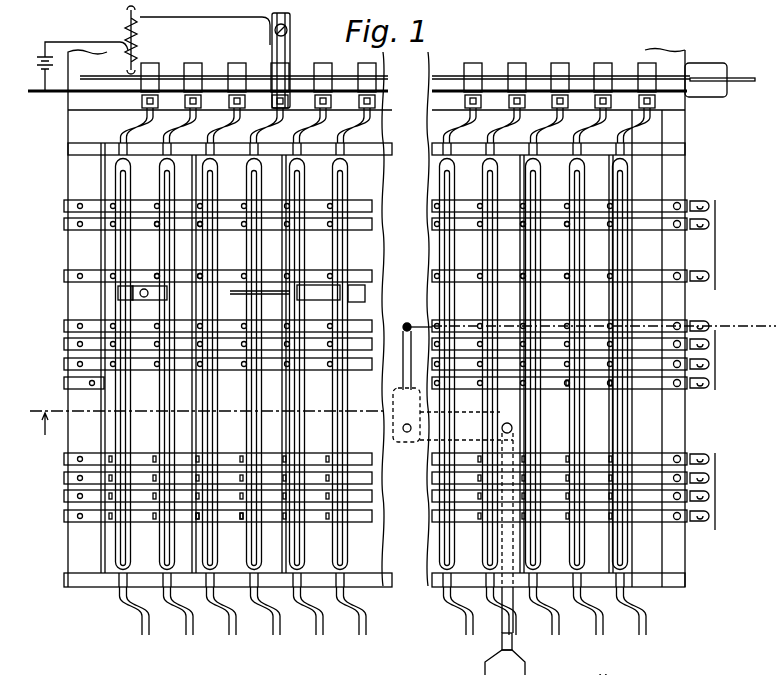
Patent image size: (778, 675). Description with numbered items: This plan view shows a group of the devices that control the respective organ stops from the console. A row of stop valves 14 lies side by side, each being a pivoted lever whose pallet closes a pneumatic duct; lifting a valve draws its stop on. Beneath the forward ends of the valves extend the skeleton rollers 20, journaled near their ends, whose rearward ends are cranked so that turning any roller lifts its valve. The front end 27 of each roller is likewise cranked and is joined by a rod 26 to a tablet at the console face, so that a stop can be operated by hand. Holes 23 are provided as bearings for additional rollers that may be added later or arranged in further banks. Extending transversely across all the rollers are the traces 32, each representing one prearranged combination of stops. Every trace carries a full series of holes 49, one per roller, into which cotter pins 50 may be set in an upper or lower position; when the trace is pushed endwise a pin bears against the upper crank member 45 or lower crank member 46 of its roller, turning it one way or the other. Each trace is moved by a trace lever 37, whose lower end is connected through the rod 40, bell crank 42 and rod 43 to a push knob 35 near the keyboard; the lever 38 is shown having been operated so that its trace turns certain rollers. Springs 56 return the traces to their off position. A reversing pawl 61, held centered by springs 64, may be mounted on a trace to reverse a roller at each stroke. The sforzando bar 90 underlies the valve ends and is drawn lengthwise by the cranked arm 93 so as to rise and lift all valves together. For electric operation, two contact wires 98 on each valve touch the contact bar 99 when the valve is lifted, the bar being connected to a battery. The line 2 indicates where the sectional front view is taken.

The stop valve 14 is at (240, 70).
The contact bar 99 is at (262, 90).
The contact wire 98 is at (289, 62).
The sforzando bar 90 is at (625, 75).
The cranked arm 93 is at (745, 83).
The skeleton roller 20 is at (125, 132).
The hole 23 is at (147, 157).
The spring 56 is at (78, 223).
The trace 32 is at (72, 326).
The hole 49 is at (200, 275).
The spring 64 is at (192, 292).
The reversing pawl 61 is at (322, 293).
The rod 40 is at (410, 321).
The bell crank 42 is at (402, 345).
The lever 38 is at (712, 381).
The section line 2 is at (197, 417).
The lower crank member 46 is at (250, 448).
The upper crank member 45 is at (262, 446).
The cotter pin 50 is at (242, 519).
The trace lever 37 is at (712, 503).
The front end of roller 27 is at (143, 620).
The rod 43 is at (503, 640).
The push knob 35 is at (517, 667).
The rod 26 is at (617, 665).